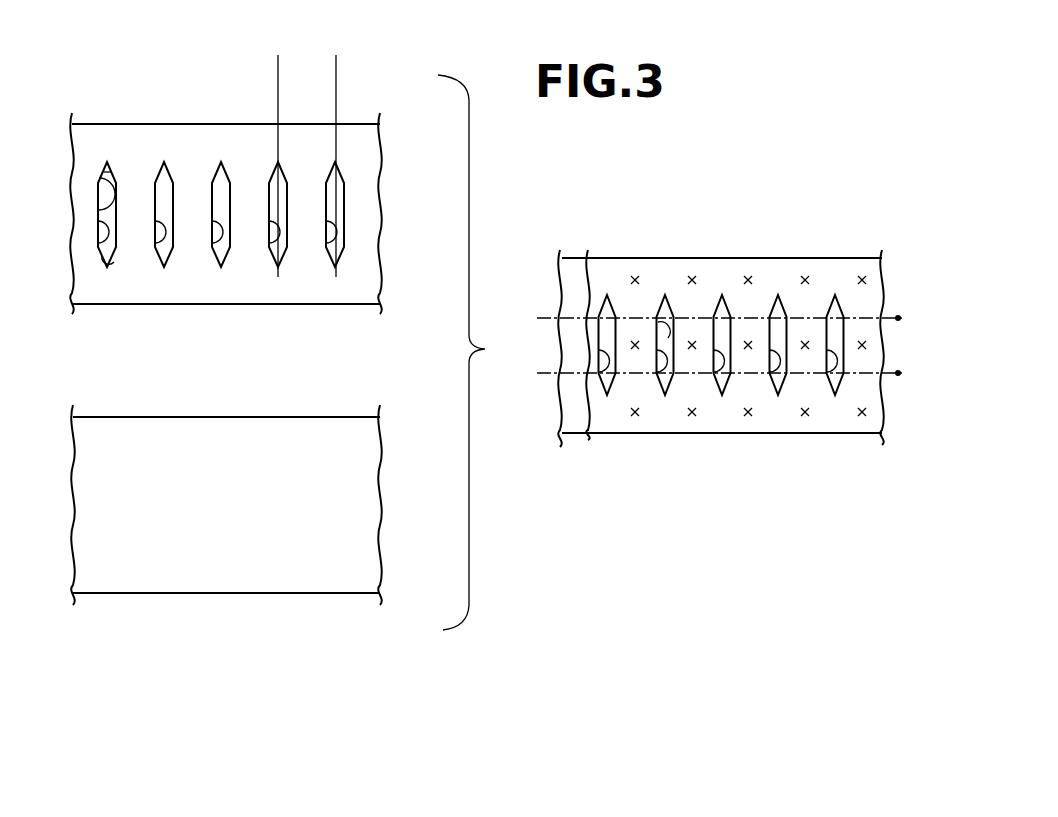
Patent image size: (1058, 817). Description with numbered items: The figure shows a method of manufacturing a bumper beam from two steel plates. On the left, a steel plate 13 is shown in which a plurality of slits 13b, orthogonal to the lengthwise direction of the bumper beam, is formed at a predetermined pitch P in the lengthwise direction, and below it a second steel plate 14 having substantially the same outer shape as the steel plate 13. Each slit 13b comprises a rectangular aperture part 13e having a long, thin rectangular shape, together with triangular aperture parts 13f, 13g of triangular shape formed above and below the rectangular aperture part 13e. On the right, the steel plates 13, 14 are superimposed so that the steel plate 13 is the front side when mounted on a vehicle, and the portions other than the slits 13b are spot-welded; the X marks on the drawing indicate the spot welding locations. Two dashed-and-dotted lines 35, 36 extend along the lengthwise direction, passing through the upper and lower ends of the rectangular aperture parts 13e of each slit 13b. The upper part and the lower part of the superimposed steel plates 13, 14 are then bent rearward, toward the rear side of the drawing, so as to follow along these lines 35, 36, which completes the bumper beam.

The steel plate 13 is at (213, 124).
The slit 13b is at (157, 245).
The rectangular aperture part 13e is at (101, 185).
The triangular aperture part 13f is at (104, 173).
The triangular aperture part 13g is at (111, 260).
The steel plate 14 is at (215, 594).
The dashed-and-dotted line 35 is at (898, 318).
The dashed-and-dotted line 36 is at (898, 373).
The pitch P is at (278, 62).